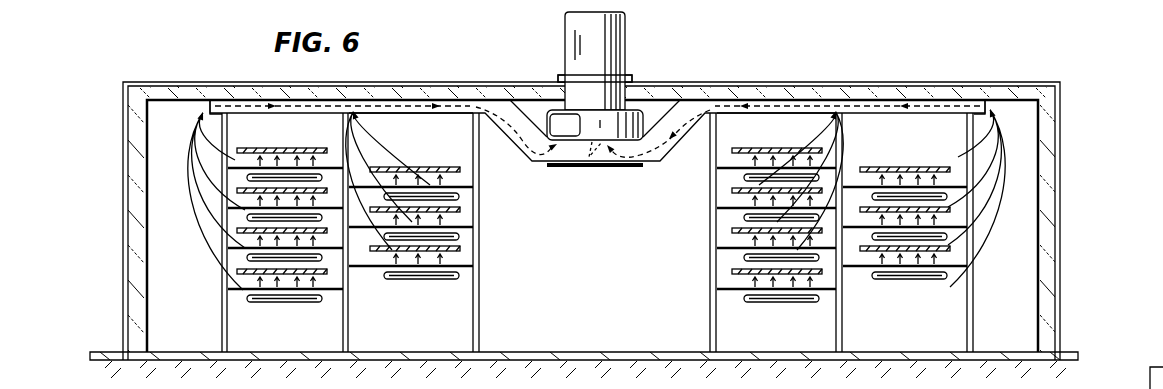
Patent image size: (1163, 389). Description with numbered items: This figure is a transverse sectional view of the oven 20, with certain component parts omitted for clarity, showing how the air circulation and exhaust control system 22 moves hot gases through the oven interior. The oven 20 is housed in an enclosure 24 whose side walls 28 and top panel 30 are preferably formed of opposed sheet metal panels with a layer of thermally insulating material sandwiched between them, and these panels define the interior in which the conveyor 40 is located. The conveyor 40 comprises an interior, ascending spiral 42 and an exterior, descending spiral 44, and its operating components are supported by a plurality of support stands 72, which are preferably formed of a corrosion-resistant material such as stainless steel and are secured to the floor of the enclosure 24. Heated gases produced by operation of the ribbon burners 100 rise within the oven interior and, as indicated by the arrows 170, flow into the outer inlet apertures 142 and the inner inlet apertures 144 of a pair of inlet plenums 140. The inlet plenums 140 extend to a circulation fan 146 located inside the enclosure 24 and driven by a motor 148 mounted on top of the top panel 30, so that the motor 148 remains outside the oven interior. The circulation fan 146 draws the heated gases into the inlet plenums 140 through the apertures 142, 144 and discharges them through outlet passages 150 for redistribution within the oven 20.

The oven 20 is at (1104, 242).
The air circulation and exhaust control system 22 is at (560, 177).
The enclosure 24 is at (1067, 87).
The side panels or walls 28 is at (135, 140).
The ceiling or top panel 30 is at (868, 86).
The conveyor 40 is at (702, 158).
The interior, ascending spiral 42 is at (467, 247).
The exterior, descending spiral 44 is at (227, 260).
The support stands 72 is at (219, 303).
The ribbon burners 100 is at (407, 289).
The inlet plenums 140 is at (382, 106).
The outer inlet aperture 142 is at (212, 104).
The inner inlet aperture 144 is at (360, 128).
The circulation fan 146 is at (612, 136).
The motor 148 is at (626, 46).
The outlet passages 150 is at (550, 127).
The arrows 170 is at (338, 139).